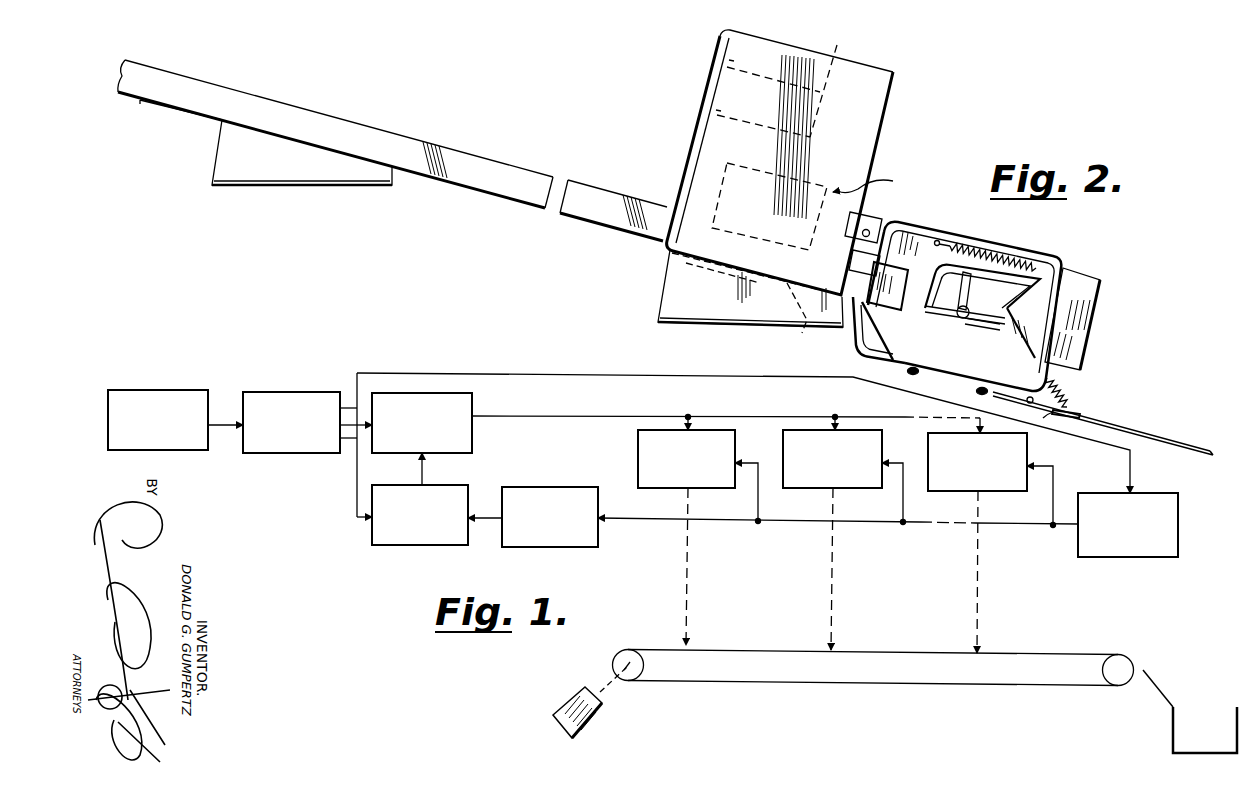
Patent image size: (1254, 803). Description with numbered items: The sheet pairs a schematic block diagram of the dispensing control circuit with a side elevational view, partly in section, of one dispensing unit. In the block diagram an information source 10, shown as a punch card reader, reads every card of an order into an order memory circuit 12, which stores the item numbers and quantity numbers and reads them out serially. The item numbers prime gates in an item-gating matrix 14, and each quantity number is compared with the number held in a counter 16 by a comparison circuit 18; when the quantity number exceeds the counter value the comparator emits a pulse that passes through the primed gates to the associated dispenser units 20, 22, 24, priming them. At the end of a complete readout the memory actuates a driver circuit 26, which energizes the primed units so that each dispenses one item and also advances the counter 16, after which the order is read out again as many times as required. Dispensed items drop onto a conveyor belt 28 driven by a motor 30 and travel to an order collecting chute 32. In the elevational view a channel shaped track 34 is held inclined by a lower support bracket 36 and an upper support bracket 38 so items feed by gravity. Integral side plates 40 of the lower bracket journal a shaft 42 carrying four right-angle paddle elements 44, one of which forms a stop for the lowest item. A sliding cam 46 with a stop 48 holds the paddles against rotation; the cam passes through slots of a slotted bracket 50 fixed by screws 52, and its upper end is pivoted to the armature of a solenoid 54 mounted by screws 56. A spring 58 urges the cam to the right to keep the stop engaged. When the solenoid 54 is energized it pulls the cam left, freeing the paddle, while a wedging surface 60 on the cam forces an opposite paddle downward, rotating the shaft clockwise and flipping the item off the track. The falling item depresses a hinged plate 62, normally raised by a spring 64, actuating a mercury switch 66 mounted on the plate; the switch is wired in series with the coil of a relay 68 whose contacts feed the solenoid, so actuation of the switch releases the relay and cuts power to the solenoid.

In FIG. 1, the information source 10 is at (197, 390).
In FIG. 1, the order memory circuit 12 is at (318, 392).
In FIG. 1, the item-gating matrix 14 is at (473, 403).
In FIG. 1, the counter 16 is at (549, 487).
In FIG. 1, the comparison circuit 18 is at (468, 485).
In FIG. 1, the dispenser unit 20 is at (725, 428).
In FIG. 1, the dispenser unit 22 is at (816, 428).
In FIG. 1, the dispenser unit 24 is at (943, 433).
In FIG. 1, the driver circuit 26 is at (1113, 493).
In FIG. 1, the conveyor belt 28 is at (877, 684).
In FIG. 1, the motor 30 is at (603, 711).
In FIG. 1, the order collecting chute 32 is at (1175, 700).
In FIG. 2, the track 34 is at (605, 191).
In FIG. 2, the lower support bracket 36 is at (767, 327).
In FIG. 2, the upper support bracket 38 is at (328, 190).
In FIG. 2, the side plates 40 is at (915, 360).
In FIG. 2, the shaft 42 is at (968, 306).
In FIG. 2, the paddle elements 44 is at (974, 323).
In FIG. 2, the sliding cam 46 is at (900, 229).
In FIG. 2, the stop 48 is at (912, 311).
In FIG. 2, the slotted bracket 50 is at (1085, 269).
In FIG. 2, the screws 52 is at (968, 389).
In FIG. 2, the solenoid 54 is at (874, 183).
In FIG. 2, the screws 56 is at (682, 264).
In FIG. 2, the spring 58 is at (1043, 264).
In FIG. 2, the wedging surface 60 is at (1026, 349).
In FIG. 2, the hinged plate 62 is at (1143, 433).
In FIG. 2, the spring 64 is at (1047, 374).
In FIG. 2, the mercury switch 66 is at (1092, 407).
In FIG. 2, the relay 68 is at (837, 53).